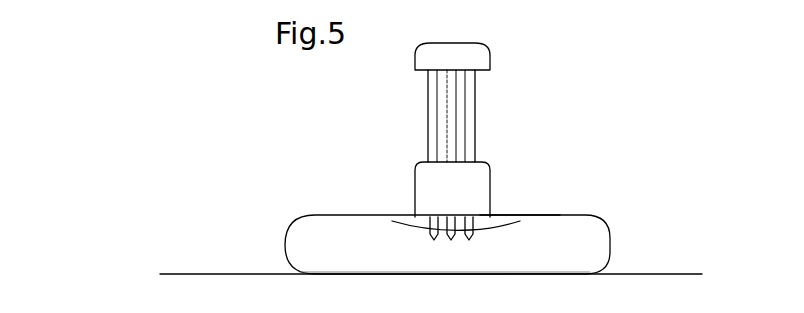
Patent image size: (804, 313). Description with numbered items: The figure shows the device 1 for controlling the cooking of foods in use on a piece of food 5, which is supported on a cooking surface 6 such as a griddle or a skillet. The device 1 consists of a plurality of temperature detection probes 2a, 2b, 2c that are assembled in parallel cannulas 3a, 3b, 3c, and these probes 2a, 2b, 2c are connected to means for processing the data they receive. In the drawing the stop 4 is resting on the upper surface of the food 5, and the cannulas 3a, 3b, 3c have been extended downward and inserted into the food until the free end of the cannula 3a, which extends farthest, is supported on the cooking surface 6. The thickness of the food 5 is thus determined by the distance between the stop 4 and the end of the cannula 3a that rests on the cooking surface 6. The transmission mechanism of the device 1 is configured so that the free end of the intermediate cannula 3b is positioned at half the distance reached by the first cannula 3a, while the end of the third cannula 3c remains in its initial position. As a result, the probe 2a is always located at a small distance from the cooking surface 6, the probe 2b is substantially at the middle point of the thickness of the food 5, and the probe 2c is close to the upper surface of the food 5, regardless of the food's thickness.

The device 1 is at (537, 35).
The probe 2a is at (522, 218).
The probe 2b is at (466, 233).
The probe 2c is at (430, 229).
The cannula 3a is at (476, 102).
The intermediate cannula 3b is at (456, 137).
The third cannula 3c is at (432, 137).
The stop 4 is at (462, 218).
The food 5 is at (600, 218).
The cooking surface 6 is at (250, 274).